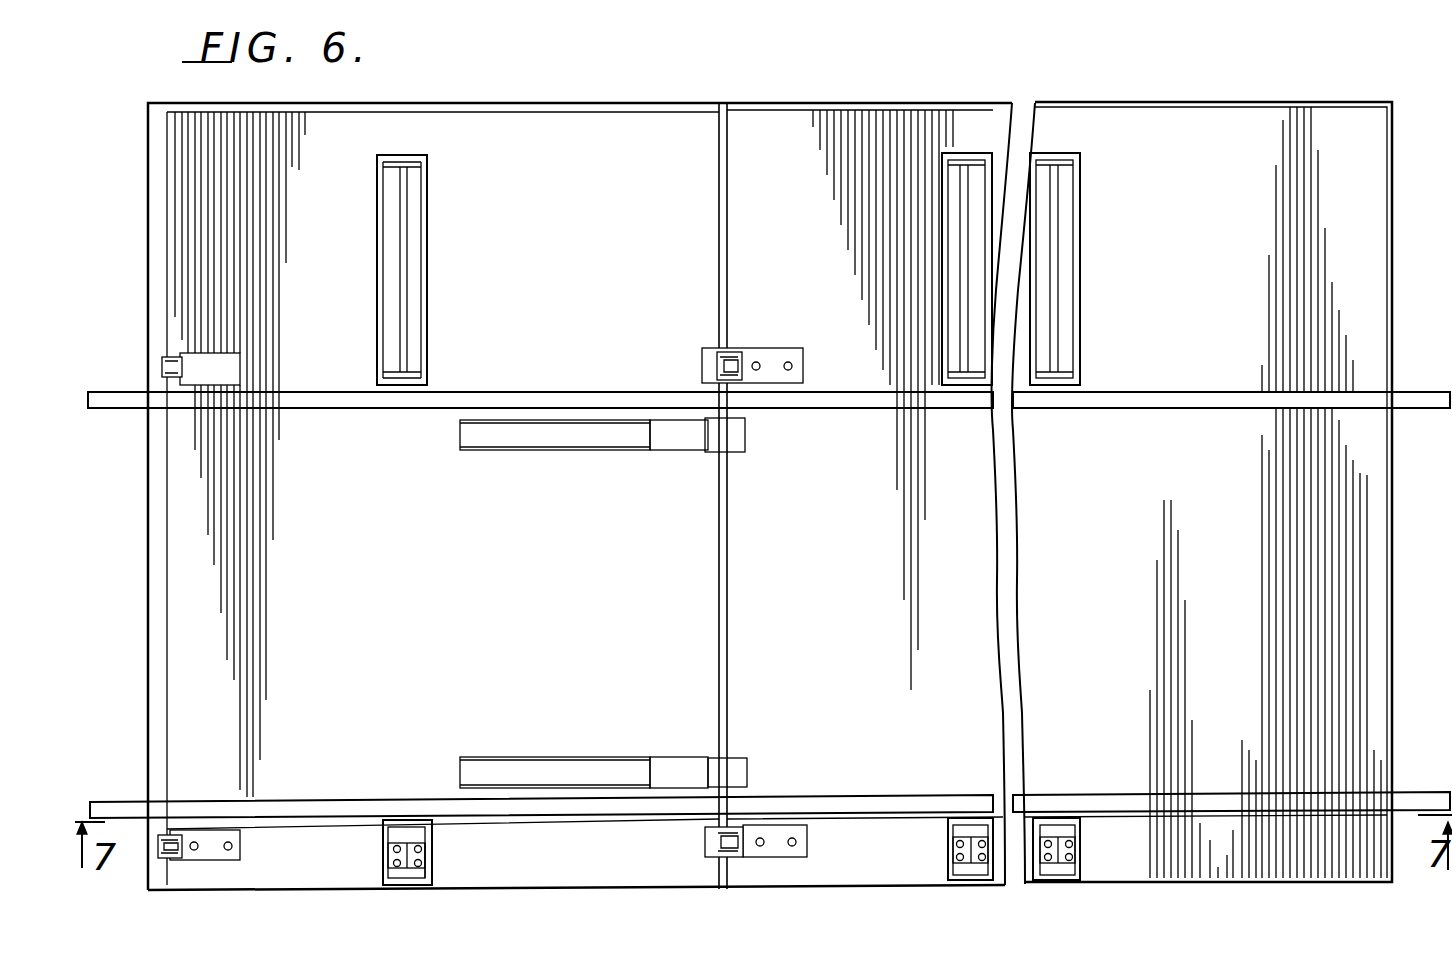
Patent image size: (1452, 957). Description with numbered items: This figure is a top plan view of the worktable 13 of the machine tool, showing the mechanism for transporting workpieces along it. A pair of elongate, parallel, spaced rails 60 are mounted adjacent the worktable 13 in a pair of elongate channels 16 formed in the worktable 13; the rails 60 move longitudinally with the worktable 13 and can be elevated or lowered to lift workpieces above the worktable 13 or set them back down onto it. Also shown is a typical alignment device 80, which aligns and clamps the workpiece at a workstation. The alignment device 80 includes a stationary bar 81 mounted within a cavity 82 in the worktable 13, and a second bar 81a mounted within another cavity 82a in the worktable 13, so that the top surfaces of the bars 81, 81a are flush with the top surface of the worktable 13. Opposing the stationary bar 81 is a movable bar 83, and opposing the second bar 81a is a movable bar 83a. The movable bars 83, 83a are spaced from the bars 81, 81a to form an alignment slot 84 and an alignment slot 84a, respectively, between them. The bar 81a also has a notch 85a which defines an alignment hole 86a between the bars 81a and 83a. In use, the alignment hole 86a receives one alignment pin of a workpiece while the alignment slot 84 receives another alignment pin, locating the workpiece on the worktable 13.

The worktable 13 is at (566, 593).
The elongate channels 16 is at (336, 392).
The rails 60 is at (470, 400).
The alignment device 80 is at (367, 226).
The stationary bar 81 is at (388, 251).
The cavity 82 is at (427, 243).
The movable bar 83 is at (412, 305).
The alignment slot 84 is at (403, 217).
The bar 81a is at (393, 850).
The cavity 82a is at (430, 872).
The movable bar 83a is at (424, 852).
The alignment slot 84a is at (409, 868).
The notch 85a is at (392, 862).
The alignment hole 86a is at (410, 845).